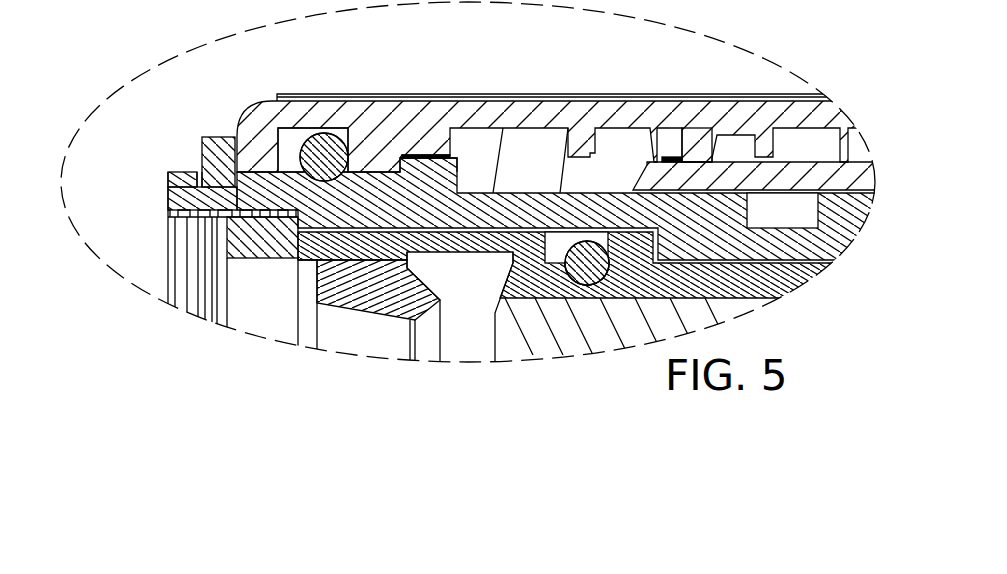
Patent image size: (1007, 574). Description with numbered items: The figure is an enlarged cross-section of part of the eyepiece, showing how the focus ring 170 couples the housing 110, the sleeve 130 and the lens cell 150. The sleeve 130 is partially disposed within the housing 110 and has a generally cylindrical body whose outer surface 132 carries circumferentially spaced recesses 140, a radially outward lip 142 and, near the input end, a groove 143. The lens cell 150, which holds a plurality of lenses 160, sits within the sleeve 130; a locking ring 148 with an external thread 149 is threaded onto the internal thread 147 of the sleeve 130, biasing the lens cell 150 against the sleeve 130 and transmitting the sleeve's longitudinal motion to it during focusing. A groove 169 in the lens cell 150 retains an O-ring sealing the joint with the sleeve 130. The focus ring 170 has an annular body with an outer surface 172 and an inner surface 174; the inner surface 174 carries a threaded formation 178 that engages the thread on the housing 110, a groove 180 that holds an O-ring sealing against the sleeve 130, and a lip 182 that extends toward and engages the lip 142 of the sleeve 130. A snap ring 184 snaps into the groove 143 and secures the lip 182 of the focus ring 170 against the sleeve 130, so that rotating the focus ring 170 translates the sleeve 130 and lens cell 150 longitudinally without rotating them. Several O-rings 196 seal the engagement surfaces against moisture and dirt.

The housing 110 is at (682, 140).
The sleeve 130 is at (170, 182).
The outer surface 132 is at (868, 162).
The recesses 140 is at (783, 210).
The lip 142 is at (420, 157).
The groove 143 is at (196, 182).
The internal thread 147 is at (167, 268).
The locking ring 148 is at (247, 263).
The external thread 149 is at (240, 217).
The lens cell 150 is at (772, 256).
The lenses 160 is at (350, 307).
The groove 169 is at (510, 270).
The focus ring 170 is at (501, 92).
The outer surface 172 is at (605, 97).
The inner surface 174 is at (482, 128).
The threaded formation 178 is at (695, 152).
The groove 180 is at (290, 128).
The lip 182 is at (397, 163).
The snap ring 184 is at (225, 128).
The O-rings 196 is at (324, 148).